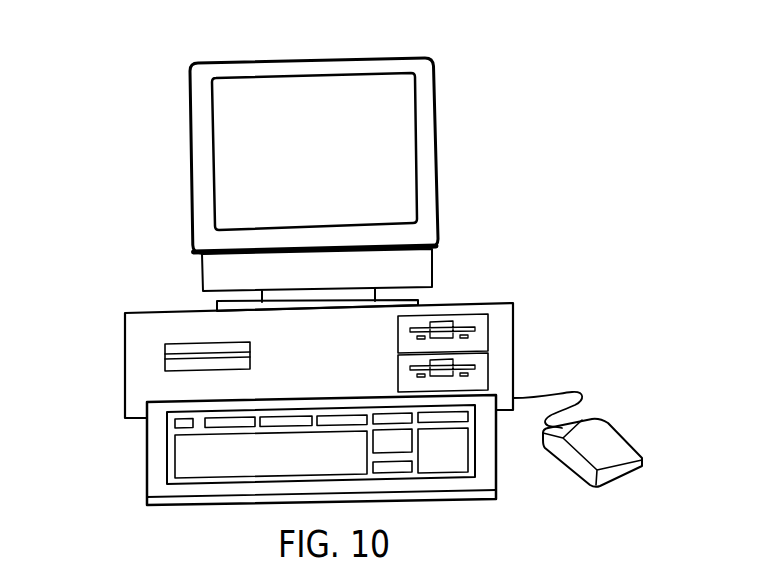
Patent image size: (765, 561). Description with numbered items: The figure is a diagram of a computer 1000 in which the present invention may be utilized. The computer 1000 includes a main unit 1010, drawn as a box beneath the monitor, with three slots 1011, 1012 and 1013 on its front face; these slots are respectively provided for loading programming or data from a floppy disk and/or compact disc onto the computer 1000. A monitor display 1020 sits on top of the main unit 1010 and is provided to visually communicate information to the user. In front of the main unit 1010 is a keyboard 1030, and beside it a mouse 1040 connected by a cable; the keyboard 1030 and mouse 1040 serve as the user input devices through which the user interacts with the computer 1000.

The computer 1000 is at (623, 145).
The main unit 1010 is at (157, 312).
The slot 1011 is at (410, 338).
The slot 1012 is at (408, 377).
The slot 1013 is at (165, 351).
The monitor display 1020 is at (437, 128).
The keyboard 1030 is at (148, 458).
The mouse 1040 is at (615, 432).